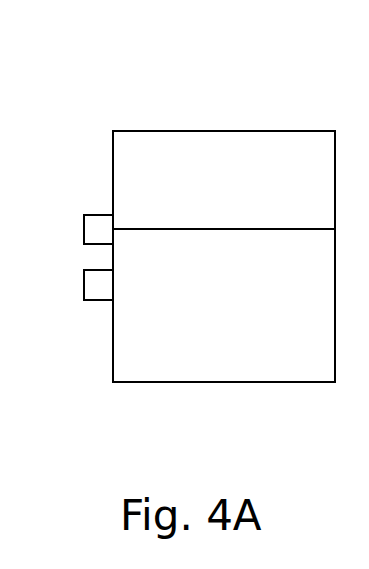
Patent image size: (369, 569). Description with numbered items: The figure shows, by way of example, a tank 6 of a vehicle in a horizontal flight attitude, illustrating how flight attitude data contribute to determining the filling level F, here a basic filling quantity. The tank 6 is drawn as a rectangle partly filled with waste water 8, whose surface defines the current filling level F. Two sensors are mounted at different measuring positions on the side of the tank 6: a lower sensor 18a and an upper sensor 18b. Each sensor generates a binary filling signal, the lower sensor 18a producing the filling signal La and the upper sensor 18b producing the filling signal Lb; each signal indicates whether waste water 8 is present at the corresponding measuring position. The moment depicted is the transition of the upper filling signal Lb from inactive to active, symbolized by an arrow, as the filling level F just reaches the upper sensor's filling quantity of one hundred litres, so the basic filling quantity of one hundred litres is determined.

The tank 6 is at (213, 131).
The waste water 8 is at (221, 296).
The filling level F is at (224, 218).
The lower sensor 18a is at (93, 300).
The upper sensor 18b is at (97, 215).
The filling signal La is at (48, 290).
The filling signal Lb is at (73, 216).